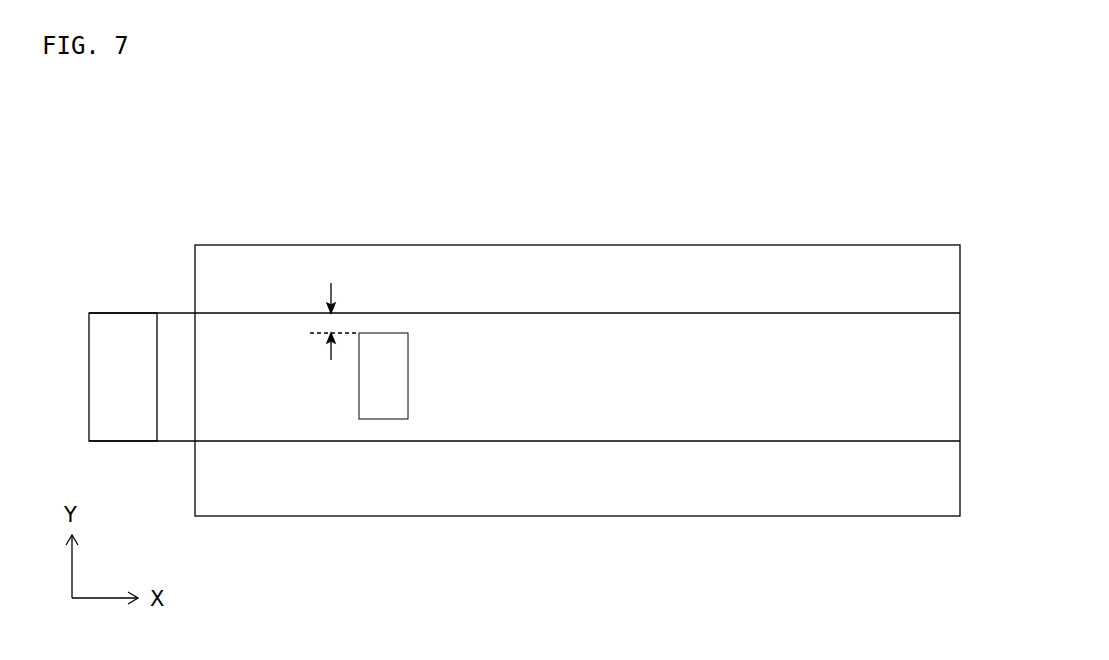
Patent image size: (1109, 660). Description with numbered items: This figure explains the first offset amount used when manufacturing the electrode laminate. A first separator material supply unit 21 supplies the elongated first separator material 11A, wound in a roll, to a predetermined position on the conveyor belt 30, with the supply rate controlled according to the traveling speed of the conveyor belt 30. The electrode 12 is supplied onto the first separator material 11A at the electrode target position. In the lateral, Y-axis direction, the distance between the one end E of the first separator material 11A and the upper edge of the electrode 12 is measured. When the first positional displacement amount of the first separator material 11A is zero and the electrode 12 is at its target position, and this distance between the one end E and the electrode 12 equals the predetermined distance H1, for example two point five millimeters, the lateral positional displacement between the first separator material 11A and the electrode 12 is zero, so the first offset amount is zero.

The conveyor belt 30 is at (800, 245).
The first separator material 11A is at (612, 313).
The first separator material supply unit 21 is at (125, 313).
The one end of the first separator material E is at (461, 313).
The electrode 12 is at (408, 377).
The predetermined distance H1 is at (313, 323).